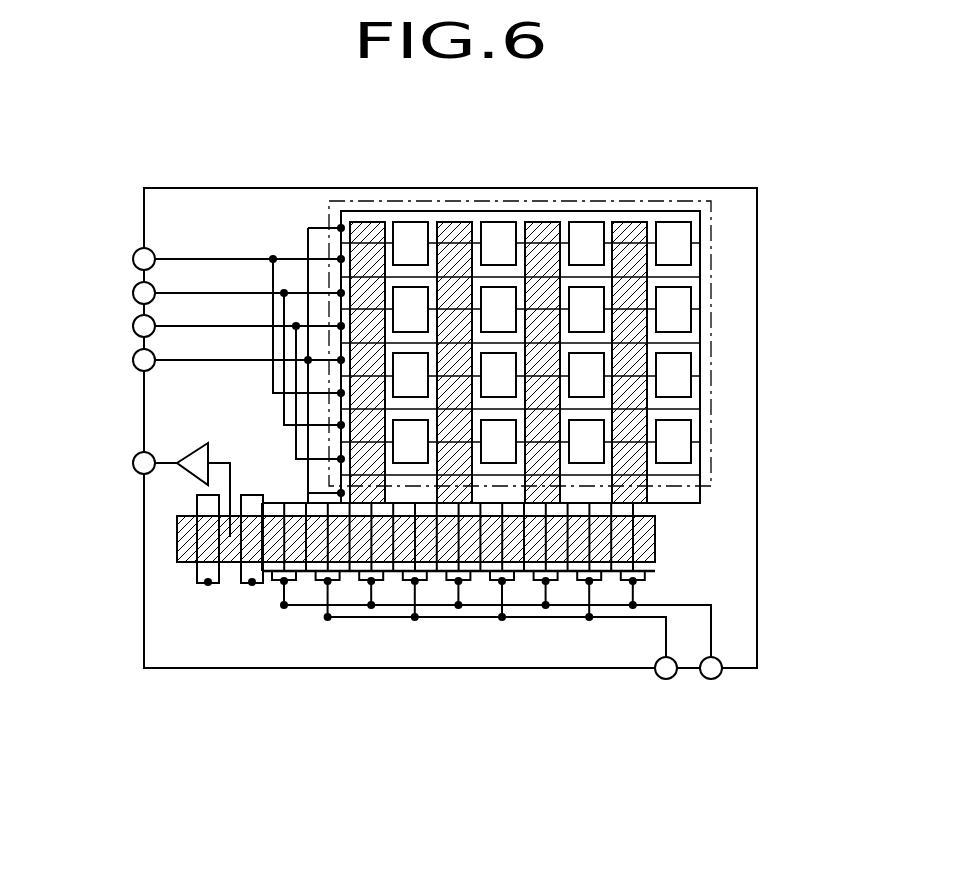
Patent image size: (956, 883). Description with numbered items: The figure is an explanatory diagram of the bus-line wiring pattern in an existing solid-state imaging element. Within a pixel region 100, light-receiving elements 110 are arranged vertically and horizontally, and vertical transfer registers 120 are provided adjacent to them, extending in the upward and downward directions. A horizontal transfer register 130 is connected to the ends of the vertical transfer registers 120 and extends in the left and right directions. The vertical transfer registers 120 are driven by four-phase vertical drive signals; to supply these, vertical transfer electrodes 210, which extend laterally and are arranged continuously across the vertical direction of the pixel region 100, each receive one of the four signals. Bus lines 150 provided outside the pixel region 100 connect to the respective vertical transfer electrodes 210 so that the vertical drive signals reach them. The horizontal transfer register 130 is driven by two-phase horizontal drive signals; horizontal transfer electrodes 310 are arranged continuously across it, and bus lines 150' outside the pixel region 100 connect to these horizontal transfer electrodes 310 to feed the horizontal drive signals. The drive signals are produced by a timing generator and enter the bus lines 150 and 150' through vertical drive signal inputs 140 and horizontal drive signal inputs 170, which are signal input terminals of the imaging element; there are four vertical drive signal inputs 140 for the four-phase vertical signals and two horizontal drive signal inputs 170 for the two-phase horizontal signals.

The pixel region 100 is at (712, 445).
The light-receiving elements 110 is at (677, 368).
The vertical transfer registers 120 is at (372, 225).
The horizontal transfer register 130 is at (645, 538).
The vertical drive signal inputs 140 is at (134, 263).
The bus lines 150 is at (203, 363).
The bus lines 150' is at (495, 649).
The horizontal drive signal inputs 170 is at (670, 680).
The vertical transfer electrodes 210 is at (693, 235).
The horizontal transfer electrodes 310 is at (277, 565).